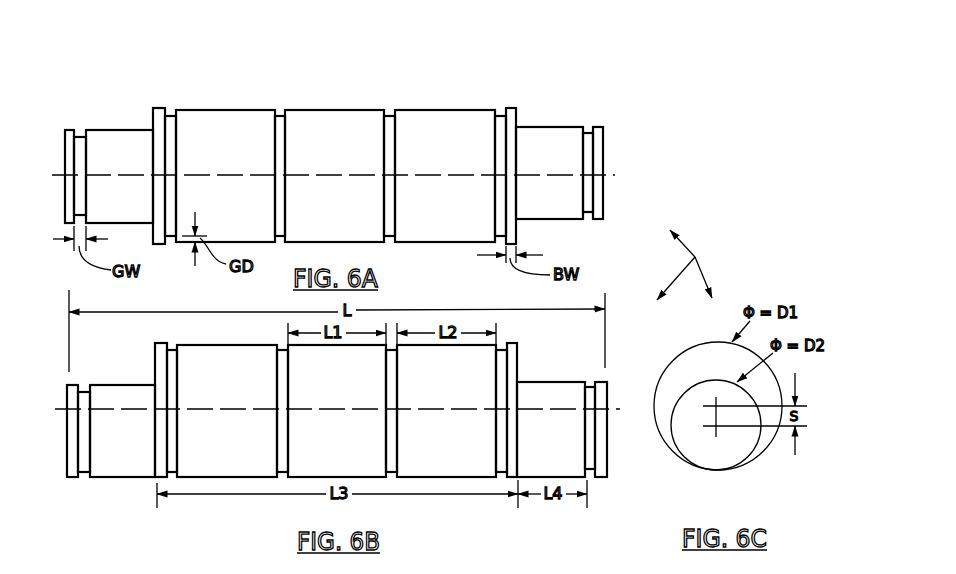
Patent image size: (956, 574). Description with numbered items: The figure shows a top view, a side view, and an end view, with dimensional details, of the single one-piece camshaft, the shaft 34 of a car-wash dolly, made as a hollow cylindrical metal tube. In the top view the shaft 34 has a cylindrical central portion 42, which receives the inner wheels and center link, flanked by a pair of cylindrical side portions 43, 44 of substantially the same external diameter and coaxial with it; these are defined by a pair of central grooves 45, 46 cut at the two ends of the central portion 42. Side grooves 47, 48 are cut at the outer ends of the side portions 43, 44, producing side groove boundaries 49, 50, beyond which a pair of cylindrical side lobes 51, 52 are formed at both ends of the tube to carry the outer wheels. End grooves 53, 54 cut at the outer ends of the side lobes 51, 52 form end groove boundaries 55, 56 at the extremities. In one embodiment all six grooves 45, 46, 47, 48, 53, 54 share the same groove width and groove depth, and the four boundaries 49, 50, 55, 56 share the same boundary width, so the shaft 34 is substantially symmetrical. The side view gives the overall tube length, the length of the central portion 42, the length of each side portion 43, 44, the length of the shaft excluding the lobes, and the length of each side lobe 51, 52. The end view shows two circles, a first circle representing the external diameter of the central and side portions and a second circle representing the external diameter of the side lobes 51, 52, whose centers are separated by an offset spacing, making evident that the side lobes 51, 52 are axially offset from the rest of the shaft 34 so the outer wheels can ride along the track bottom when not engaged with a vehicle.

In FIG. 6C, the shaft 34 is at (716, 253).
In FIG. 6A, the central portion 42 is at (347, 110).
In FIG. 6A, the side portion 43 is at (230, 110).
In FIG. 6A, the side portion 44 is at (439, 110).
In FIG. 6A, the central groove 45 is at (279, 116).
In FIG. 6A, the central groove 46 is at (389, 116).
In FIG. 6A, the side groove 47 is at (169, 116).
In FIG. 6A, the side groove 48 is at (499, 116).
In FIG. 6A, the side groove boundary 49 is at (160, 108).
In FIG. 6A, the side groove boundary 50 is at (511, 108).
In FIG. 6A, the side lobe 51 is at (126, 130).
In FIG. 6A, the side lobe 52 is at (552, 127).
In FIG. 6A, the end groove 53 is at (82, 137).
In FIG. 6A, the end groove 54 is at (587, 133).
In FIG. 6A, the end groove boundary 55 is at (70, 130).
In FIG. 6A, the end groove boundary 56 is at (598, 127).